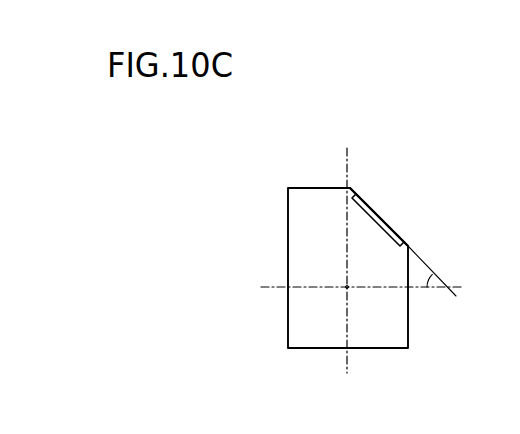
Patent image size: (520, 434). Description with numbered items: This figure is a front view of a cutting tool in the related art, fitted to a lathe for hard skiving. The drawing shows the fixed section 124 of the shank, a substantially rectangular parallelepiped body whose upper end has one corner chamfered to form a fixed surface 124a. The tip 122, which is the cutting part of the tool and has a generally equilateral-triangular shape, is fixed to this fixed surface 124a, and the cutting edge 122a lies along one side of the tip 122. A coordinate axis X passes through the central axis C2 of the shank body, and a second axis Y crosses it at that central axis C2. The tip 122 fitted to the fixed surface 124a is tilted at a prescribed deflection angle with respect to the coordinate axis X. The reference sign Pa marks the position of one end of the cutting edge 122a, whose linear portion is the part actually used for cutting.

The fixed section 124 is at (288, 222).
The fixed surface 124a is at (357, 193).
The tip 122 is at (393, 225).
The cutting edge 122a is at (384, 209).
The position of end of cutting edge Pa is at (377, 198).
The central axis C2 is at (347, 288).
The coordinate axis X is at (353, 289).
The Y axis Y is at (345, 244).